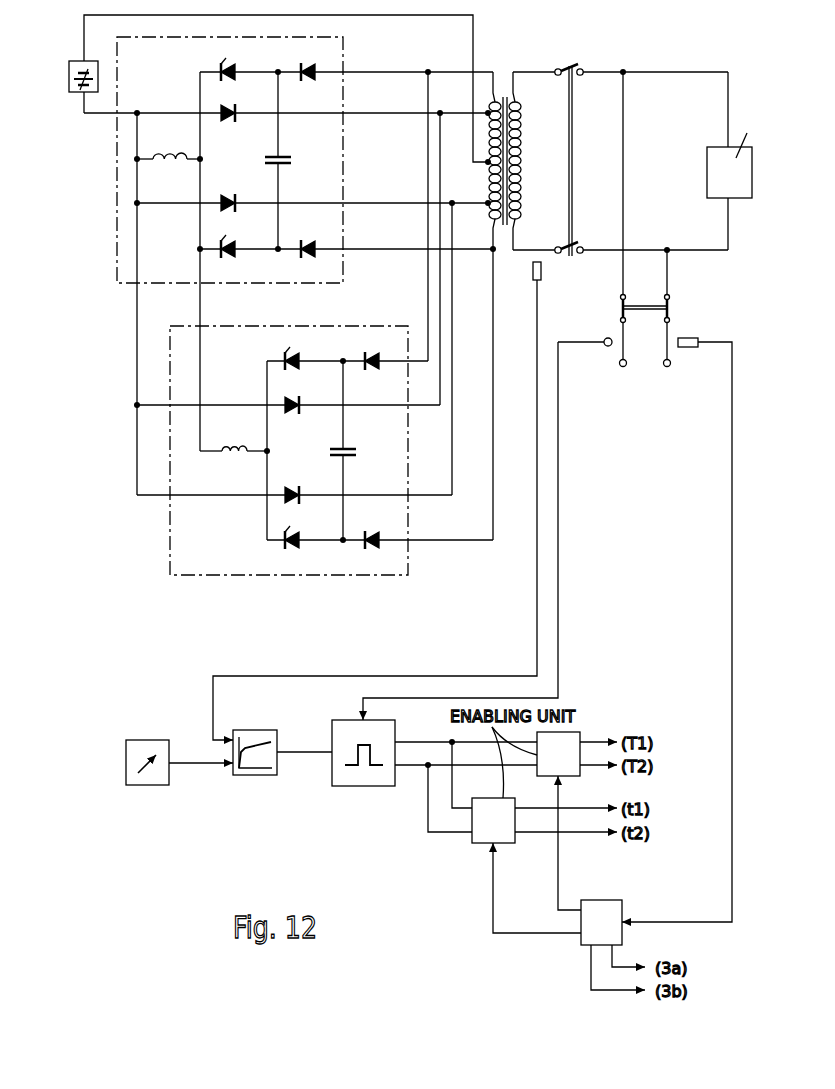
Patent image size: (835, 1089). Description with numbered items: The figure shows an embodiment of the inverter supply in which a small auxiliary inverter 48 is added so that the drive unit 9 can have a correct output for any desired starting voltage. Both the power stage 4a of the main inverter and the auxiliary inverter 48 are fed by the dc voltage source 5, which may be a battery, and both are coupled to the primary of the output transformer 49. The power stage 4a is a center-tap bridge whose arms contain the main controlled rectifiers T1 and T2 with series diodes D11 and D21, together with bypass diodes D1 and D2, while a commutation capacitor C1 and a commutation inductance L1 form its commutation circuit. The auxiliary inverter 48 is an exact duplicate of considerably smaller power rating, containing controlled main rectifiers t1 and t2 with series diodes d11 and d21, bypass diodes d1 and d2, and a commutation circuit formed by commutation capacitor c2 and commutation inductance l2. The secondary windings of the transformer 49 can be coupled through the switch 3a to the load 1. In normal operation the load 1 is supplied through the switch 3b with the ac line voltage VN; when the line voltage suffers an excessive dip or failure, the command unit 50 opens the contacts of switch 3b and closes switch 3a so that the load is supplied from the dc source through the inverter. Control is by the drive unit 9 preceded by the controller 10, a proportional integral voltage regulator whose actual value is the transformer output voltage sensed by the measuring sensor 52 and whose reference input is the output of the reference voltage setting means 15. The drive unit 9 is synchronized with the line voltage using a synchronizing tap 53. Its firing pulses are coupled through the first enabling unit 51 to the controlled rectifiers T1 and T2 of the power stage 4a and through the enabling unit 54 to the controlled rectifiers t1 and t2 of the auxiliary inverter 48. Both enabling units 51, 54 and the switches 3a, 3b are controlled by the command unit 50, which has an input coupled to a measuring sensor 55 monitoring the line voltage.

The dc voltage source 5 is at (80, 97).
The power stage of the main inverter 4a is at (116, 230).
The controlled rectifier T1 is at (236, 77).
The controlled rectifier T2 is at (236, 245).
The bypass diode D1 is at (220, 121).
The bypass diode D2 is at (221, 198).
The series diode D11 is at (316, 78).
The series diode D21 is at (324, 232).
The commutation inductance L1 is at (170, 168).
The commutation capacitor C1 is at (282, 168).
The auxiliary inverter 48 is at (169, 527).
The controlled main rectifier t1 is at (300, 366).
The controlled main rectifier t2 is at (300, 536).
The bypass diode d1 is at (284, 413).
The bypass diode d2 is at (284, 487).
The series diode d11 is at (380, 367).
The series diode d21 is at (390, 522).
The commutation inductance l2 is at (222, 444).
The commutation capacitor c2 is at (346, 460).
The output transformer 49 is at (503, 93).
The switch 3a is at (573, 158).
The switch 3b is at (641, 305).
The load 1 is at (740, 192).
The measuring sensor 52 is at (542, 269).
The synchronizing tap 53 is at (604, 334).
The measuring sensor 55 is at (692, 337).
The ac line voltage VN is at (646, 363).
The reference voltage setting means 15 is at (151, 787).
The controller 10 is at (259, 776).
The drive unit 9 is at (353, 787).
The first enabling unit 51 is at (558, 754).
The enabling unit 54 is at (493, 820).
The command unit 50 is at (601, 922).